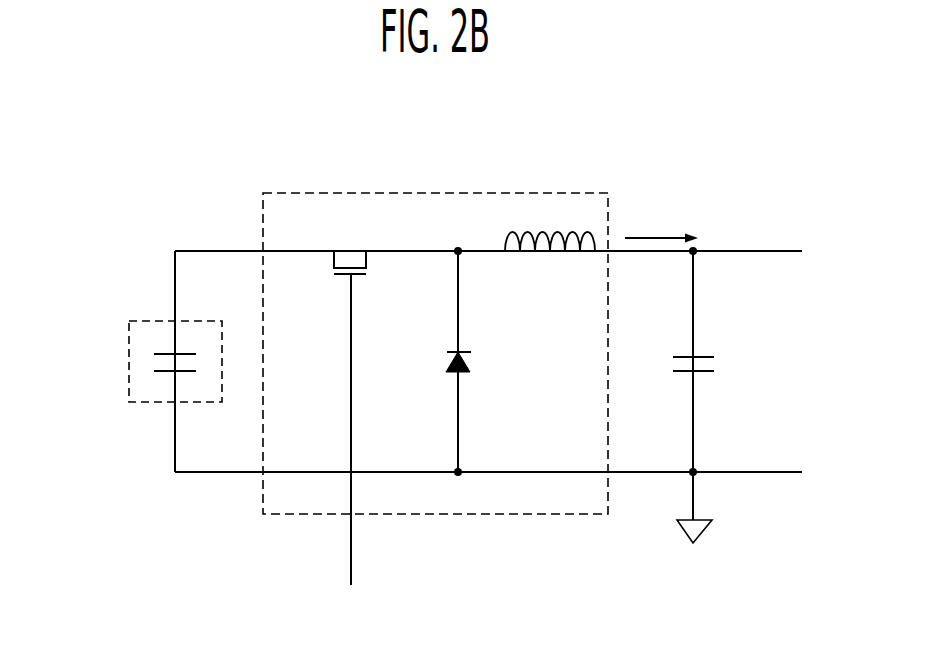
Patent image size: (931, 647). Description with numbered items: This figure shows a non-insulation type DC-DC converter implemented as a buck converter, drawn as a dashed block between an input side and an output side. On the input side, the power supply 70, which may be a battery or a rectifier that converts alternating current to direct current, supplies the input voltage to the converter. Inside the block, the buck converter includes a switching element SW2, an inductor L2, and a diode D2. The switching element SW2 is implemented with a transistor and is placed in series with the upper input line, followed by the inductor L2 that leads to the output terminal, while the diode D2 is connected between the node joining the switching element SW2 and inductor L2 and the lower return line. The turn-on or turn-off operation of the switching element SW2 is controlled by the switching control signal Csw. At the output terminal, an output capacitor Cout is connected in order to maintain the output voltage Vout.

The power supply 70 is at (128, 353).
The switching element SW2 is at (350, 404).
The switching control signal Csw is at (351, 603).
The diode D2 is at (474, 361).
The inductor L2 is at (550, 227).
The output voltage Vout is at (661, 224).
The output capacitor Cout is at (718, 395).